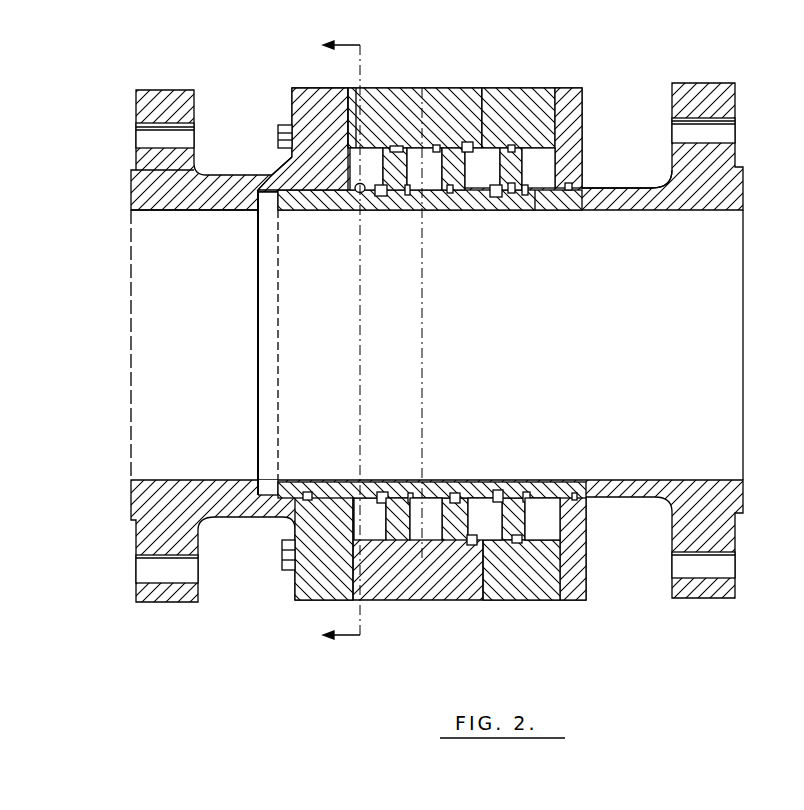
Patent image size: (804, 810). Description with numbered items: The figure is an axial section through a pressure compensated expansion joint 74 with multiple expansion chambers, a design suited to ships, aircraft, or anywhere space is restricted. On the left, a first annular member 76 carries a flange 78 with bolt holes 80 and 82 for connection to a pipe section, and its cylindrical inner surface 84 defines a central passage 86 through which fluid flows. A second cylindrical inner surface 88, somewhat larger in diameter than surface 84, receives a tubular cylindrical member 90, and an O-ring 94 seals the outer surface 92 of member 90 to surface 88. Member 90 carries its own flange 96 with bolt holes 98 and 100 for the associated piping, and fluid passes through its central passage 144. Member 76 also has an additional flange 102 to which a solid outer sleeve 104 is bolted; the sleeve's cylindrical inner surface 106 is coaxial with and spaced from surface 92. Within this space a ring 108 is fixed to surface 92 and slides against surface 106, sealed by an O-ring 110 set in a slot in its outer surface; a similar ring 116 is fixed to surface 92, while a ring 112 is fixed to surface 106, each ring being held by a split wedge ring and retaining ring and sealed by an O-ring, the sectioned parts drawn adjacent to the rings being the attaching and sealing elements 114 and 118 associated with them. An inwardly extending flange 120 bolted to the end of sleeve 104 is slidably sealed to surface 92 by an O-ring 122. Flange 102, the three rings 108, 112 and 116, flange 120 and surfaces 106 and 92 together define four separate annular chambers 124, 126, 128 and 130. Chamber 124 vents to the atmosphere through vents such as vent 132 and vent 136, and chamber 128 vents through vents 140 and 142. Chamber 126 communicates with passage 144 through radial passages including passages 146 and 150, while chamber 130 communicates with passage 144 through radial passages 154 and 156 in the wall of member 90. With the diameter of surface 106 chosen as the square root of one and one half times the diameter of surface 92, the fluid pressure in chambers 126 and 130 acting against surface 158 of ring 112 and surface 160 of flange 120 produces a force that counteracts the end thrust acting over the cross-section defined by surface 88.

The pressure compensated expansion joint 74 is at (530, 71).
The first annular member 76 is at (200, 195).
The flange 78 is at (176, 92).
The bolt hole 80 is at (196, 128).
The bolt hole 82 is at (196, 584).
The cylindrical inner surface 84 is at (175, 212).
The central passage 86 is at (165, 378).
The second cylindrical inner surface 88 is at (268, 196).
The tubular cylindrical member 90 is at (632, 203).
The outer surface 92 is at (354, 193).
The O-ring 94 is at (297, 190).
The flange 96 is at (677, 175).
The bolt hole 98 is at (672, 123).
The bolt hole 100 is at (680, 577).
The additional flange 102 is at (300, 100).
The solid outer sleeve 104 is at (436, 92).
The cylindrical inner surface 106 is at (437, 147).
The ring 108 is at (386, 157).
The O-ring 110 is at (401, 148).
The ring 112 is at (457, 165).
The retainer 114 is at (463, 197).
The ring 116 is at (516, 165).
The gland block 118 is at (518, 148).
The inwardly extending flange 120 is at (582, 144).
The O-ring 122 is at (578, 192).
The annular chamber 124 is at (368, 493).
The annular chamber 126 is at (433, 497).
The annular chamber 128 is at (485, 497).
The annular chamber 130 is at (565, 485).
The vent 132 is at (370, 580).
The vent 136 is at (366, 92).
The vent 140 is at (484, 598).
The vent 142 is at (486, 92).
The central passage 144 is at (697, 318).
The radial passage 146 is at (408, 493).
The radial passage 150 is at (439, 197).
The radial passage 154 is at (537, 493).
The radial passage 156 is at (540, 197).
The surface 158 is at (440, 518).
The surface 160 is at (560, 534).